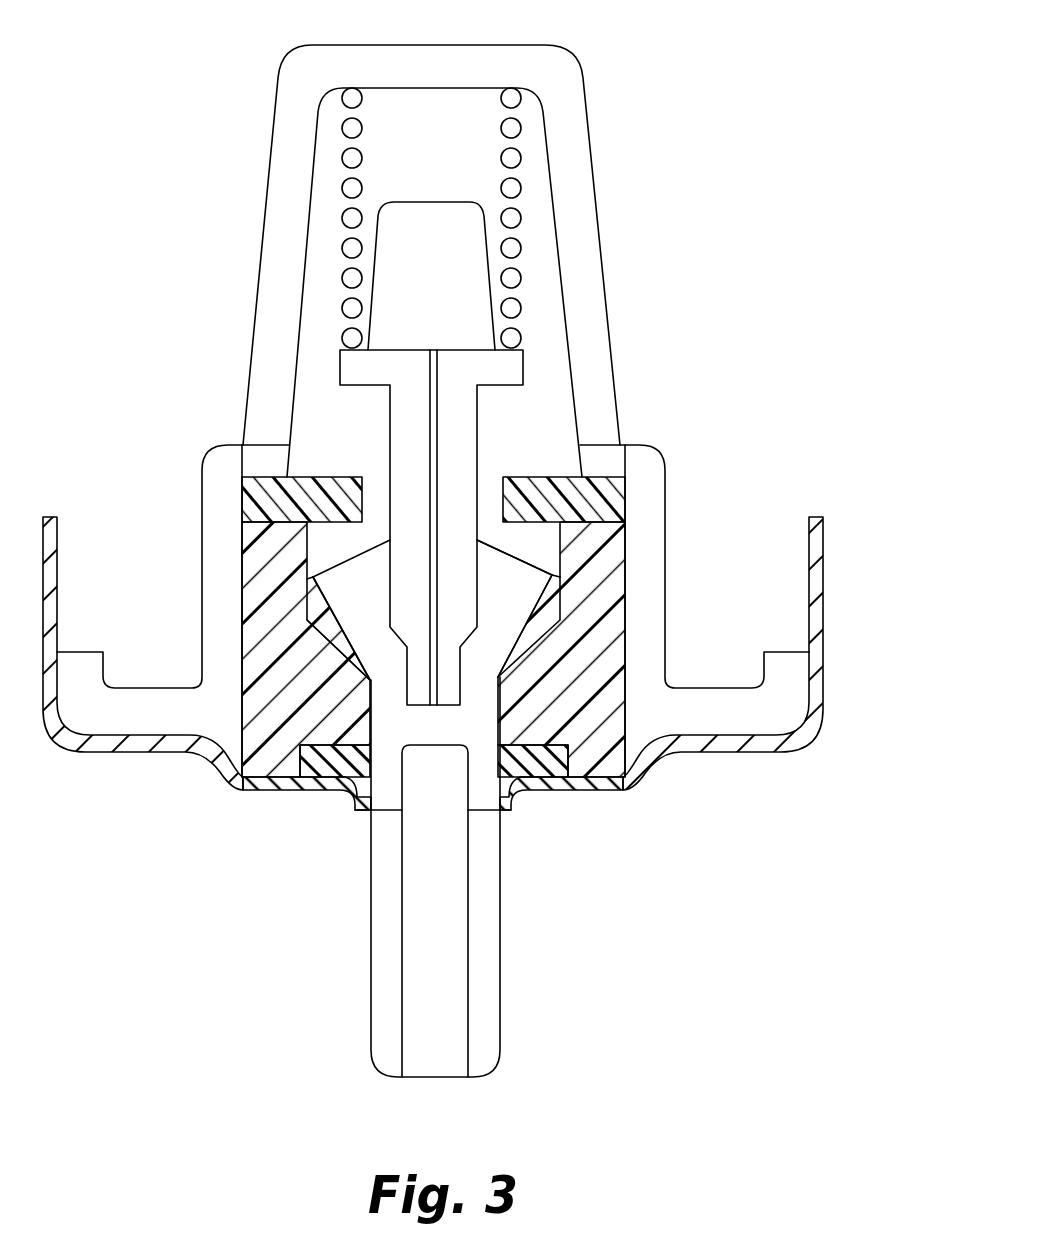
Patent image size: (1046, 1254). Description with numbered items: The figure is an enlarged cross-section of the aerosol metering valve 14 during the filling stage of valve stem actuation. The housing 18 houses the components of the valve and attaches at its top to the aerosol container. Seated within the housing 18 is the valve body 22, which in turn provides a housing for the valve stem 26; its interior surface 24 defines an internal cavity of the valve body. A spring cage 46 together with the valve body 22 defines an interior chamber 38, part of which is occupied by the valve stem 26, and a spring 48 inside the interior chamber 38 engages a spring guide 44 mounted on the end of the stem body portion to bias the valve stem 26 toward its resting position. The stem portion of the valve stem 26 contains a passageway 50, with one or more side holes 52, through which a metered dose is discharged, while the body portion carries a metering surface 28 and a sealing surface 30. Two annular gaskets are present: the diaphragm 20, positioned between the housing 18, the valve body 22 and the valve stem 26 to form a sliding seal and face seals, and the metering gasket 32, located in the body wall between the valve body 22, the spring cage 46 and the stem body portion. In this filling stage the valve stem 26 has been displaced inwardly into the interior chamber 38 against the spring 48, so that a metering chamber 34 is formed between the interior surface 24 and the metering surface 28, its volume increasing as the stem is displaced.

The metering valve 14 is at (652, 102).
The housing 18 is at (823, 578).
The diaphragm 20 is at (535, 760).
The valve body 22 is at (606, 745).
The interior surface 24 is at (562, 632).
The valve stem 26 is at (336, 770).
The metering surface 28 is at (290, 707).
The sealing surface 30 is at (347, 548).
The metering gasket 32 is at (617, 475).
The metering chamber 34 is at (518, 668).
The interior chamber 38 is at (347, 542).
The spring guide 44 is at (512, 370).
The spring cage 46 is at (295, 172).
The spring 48 is at (512, 185).
The passageway 50 is at (445, 1058).
The side holes 52 is at (395, 728).